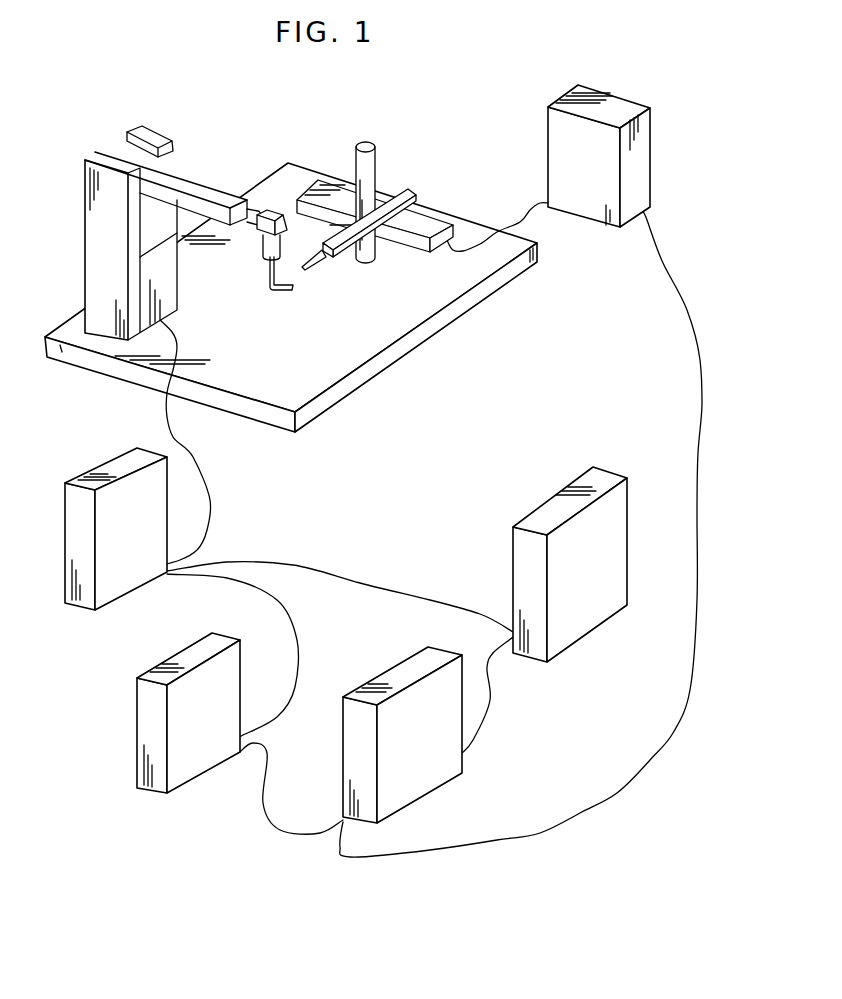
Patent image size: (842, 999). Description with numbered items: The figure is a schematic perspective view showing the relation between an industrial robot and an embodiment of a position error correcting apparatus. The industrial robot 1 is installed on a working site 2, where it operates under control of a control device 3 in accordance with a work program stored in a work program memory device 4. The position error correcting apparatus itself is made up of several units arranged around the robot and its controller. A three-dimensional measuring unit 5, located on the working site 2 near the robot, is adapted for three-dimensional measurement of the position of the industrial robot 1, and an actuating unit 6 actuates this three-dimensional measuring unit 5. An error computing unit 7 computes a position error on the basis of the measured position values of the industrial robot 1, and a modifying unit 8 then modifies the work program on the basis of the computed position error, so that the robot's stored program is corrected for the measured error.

The industrial robot 1 is at (85, 172).
The working site 2 is at (277, 170).
The control device 3 is at (66, 512).
The work program memory device 4 is at (137, 718).
The three-dimensional measuring unit 5 is at (409, 189).
The actuating unit 6 is at (640, 104).
The error computing unit 7 is at (344, 757).
The modifying unit 8 is at (628, 558).